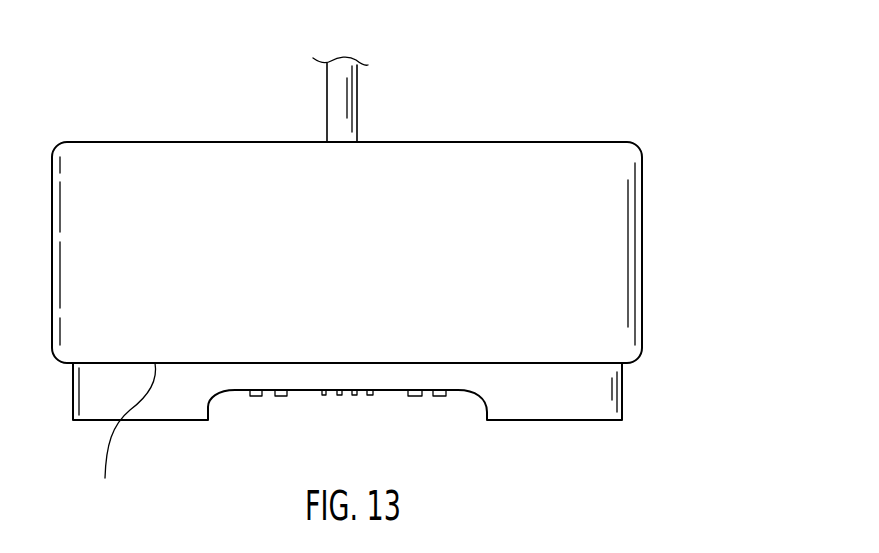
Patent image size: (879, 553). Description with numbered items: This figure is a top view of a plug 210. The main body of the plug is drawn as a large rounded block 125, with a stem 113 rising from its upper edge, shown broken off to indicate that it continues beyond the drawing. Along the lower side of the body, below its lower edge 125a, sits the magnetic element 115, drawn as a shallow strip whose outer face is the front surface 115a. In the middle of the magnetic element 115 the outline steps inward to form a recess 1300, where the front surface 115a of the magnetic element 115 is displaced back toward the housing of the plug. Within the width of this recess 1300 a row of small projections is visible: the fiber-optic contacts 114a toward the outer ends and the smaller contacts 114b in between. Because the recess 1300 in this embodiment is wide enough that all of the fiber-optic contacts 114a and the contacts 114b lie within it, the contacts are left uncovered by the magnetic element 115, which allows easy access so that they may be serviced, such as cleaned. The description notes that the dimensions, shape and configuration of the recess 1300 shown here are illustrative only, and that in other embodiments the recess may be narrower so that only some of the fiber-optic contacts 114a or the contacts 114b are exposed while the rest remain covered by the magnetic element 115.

The plug 210 is at (660, 120).
The housing 125 is at (609, 255).
The mounting post 113 is at (357, 105).
The magnetic element 115 is at (600, 390).
The housing lower edge 125a is at (121, 436).
The fiber-optic contacts 114a is at (255, 397).
The contacts 114b is at (322, 396).
The recess 1300 is at (445, 413).
The front surface of the magnetic element 115a is at (572, 420).